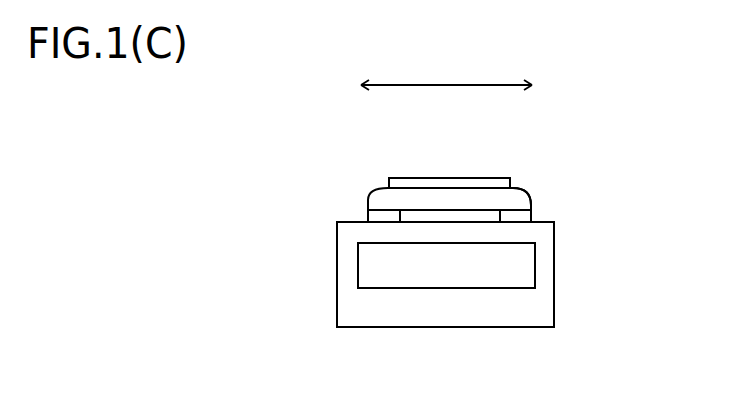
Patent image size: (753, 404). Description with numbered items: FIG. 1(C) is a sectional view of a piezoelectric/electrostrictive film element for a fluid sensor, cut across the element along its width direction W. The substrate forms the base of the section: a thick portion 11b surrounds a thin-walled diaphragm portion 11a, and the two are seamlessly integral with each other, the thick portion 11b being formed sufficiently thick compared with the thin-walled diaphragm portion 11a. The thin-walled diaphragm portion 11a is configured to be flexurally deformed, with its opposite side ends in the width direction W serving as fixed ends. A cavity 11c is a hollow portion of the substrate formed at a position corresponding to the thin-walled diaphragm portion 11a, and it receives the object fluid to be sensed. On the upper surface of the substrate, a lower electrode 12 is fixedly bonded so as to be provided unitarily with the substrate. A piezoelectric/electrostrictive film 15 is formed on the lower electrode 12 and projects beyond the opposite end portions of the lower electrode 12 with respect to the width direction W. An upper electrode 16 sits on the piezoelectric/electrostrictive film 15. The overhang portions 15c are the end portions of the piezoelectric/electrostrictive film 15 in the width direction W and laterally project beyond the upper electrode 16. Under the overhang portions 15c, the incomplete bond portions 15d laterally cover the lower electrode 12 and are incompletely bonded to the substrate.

The width direction W is at (446, 72).
The thin-walled diaphragm portion 11a is at (413, 233).
The thick portion 11b is at (548, 257).
The cavity 11c is at (446, 279).
The lower electrode 12 is at (441, 217).
The piezoelectric/electrostrictive film 15 is at (466, 197).
The overhang portions 15c is at (522, 187).
The incomplete bond portions 15d is at (535, 220).
The upper electrode 16 is at (505, 184).